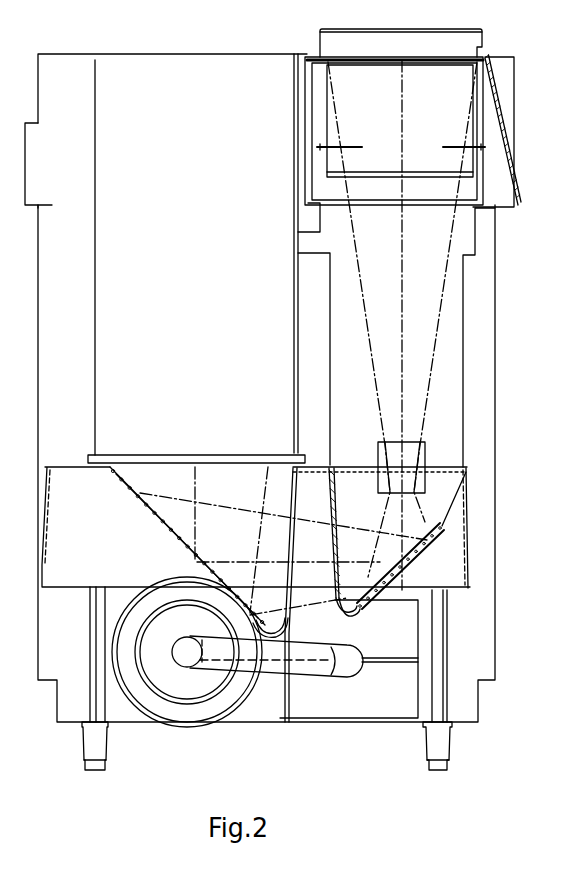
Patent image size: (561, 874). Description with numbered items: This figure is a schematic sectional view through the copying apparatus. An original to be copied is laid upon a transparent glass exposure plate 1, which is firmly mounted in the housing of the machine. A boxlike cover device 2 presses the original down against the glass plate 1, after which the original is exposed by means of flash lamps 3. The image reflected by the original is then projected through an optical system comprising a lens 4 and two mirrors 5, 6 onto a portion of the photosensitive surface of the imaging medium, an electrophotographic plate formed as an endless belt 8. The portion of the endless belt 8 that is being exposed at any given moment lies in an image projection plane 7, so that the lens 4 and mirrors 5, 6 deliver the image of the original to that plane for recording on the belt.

The transparent glass exposure plate 1 is at (380, 59).
The cover device 2 is at (372, 33).
The flash lamps 3 is at (357, 147).
The lens 4 is at (425, 452).
The mirror 5 is at (420, 553).
The mirror 6 is at (137, 510).
The image projection plane 7 is at (135, 457).
The endless belt 8 is at (227, 466).